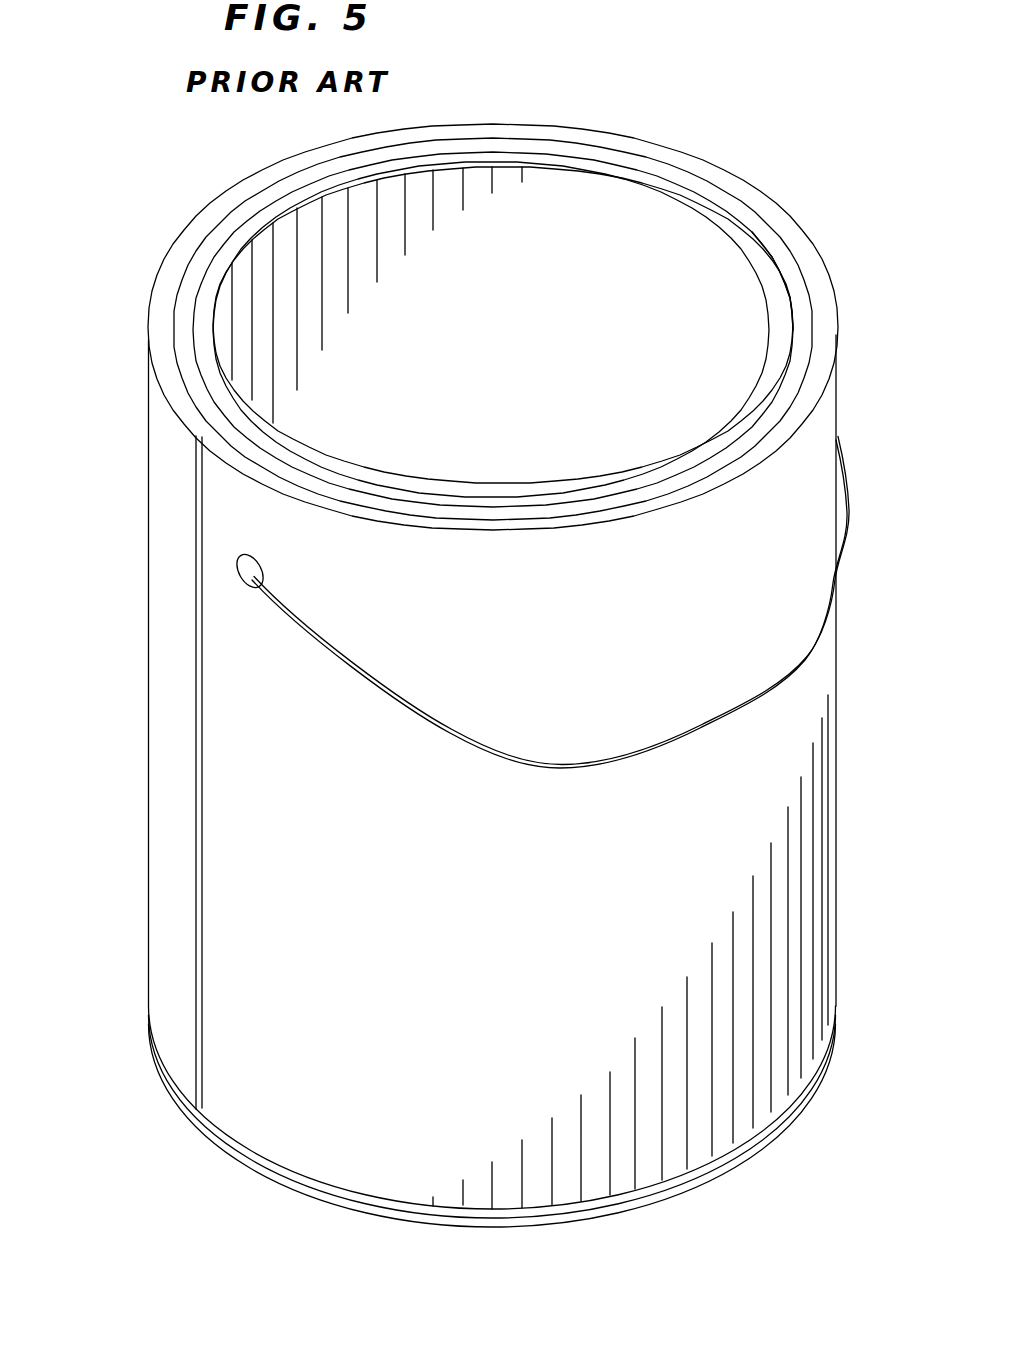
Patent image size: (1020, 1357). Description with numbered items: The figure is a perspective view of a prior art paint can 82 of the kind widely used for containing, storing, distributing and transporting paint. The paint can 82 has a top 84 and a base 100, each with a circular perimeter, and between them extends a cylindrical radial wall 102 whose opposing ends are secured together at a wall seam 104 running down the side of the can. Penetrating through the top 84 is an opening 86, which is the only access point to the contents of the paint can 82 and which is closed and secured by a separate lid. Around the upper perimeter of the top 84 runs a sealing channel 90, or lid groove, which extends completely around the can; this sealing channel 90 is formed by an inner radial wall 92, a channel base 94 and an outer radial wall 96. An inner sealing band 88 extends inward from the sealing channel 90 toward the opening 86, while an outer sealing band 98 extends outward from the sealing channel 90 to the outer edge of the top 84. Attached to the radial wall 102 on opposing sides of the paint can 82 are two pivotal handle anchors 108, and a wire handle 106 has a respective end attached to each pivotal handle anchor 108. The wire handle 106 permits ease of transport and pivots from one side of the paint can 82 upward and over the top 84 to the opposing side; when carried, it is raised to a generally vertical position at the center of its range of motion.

The paint can 82 is at (792, 90).
The top 84 is at (243, 188).
The opening 86 is at (558, 254).
The inner sealing band 88 is at (273, 430).
The sealing channel 90 is at (803, 322).
The inner radial wall 92 is at (212, 398).
The channel base 94 is at (182, 318).
The outer radial wall 96 is at (776, 245).
The outer sealing band 98 is at (207, 226).
The base 100 is at (203, 1126).
The radial wall 102 is at (149, 660).
The wall seam 104 is at (197, 763).
The wire handle 106 is at (807, 660).
The pivotal handle anchor 108 is at (252, 573).